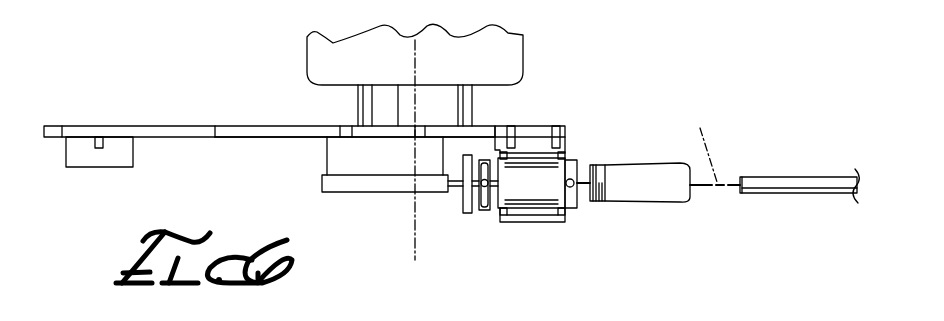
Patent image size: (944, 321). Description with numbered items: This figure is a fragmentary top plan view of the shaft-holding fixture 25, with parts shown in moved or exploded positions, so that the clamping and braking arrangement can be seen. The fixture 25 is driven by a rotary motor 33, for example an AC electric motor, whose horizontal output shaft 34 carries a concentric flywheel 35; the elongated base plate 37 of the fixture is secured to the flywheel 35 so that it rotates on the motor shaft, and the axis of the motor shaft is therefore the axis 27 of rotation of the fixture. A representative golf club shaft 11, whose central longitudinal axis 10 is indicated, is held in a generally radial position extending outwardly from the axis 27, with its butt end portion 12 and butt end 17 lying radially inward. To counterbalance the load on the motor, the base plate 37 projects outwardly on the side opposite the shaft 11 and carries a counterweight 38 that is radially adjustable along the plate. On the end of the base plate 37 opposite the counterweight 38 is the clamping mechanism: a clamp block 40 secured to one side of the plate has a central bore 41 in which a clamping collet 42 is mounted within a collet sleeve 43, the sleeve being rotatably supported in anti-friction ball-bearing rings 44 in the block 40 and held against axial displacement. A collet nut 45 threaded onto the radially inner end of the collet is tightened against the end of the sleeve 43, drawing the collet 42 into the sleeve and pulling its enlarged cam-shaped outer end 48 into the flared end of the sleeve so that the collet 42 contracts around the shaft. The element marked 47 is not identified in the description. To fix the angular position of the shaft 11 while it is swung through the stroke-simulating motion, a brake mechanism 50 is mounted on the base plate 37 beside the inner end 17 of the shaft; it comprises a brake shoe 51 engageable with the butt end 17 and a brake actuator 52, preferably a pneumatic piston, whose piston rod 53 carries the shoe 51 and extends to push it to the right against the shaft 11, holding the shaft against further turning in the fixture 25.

The central longitudinal axis 10 is at (715, 143).
The golf club shaft 11 is at (845, 208).
The butt end portion 12 is at (803, 182).
The butt end 17 is at (738, 178).
The fixture 25 is at (237, 123).
The axis of rotation 27 is at (410, 247).
The rotary motor 33 is at (515, 59).
The output shaft 34 is at (424, 100).
The flywheel 35 is at (470, 103).
The base plate 37 is at (289, 143).
The counterweight 38 is at (98, 166).
The clamp block 40 is at (507, 220).
The central bore 41 is at (545, 181).
The clamping collet 42 is at (632, 175).
The collet sleeve 43 is at (570, 150).
The anti-friction ball-bearing rings 44 is at (513, 211).
The collet nut 45 is at (484, 212).
The knurled collar 47 is at (595, 203).
The cam-shaped outer end 48 is at (677, 203).
The brake mechanism 50 is at (339, 198).
The brake shoe 51 is at (468, 214).
The brake actuator 52 is at (367, 186).
The piston rod 53 is at (459, 193).